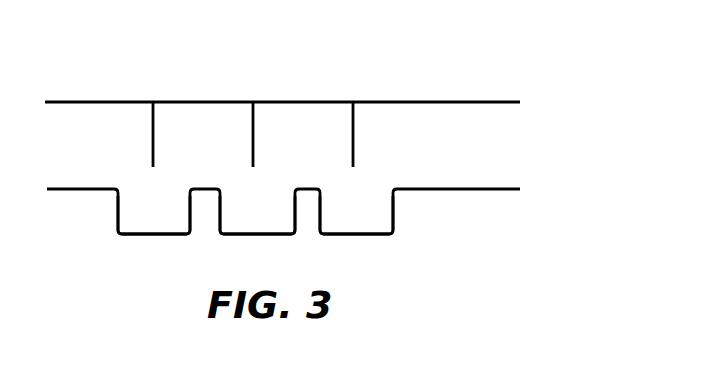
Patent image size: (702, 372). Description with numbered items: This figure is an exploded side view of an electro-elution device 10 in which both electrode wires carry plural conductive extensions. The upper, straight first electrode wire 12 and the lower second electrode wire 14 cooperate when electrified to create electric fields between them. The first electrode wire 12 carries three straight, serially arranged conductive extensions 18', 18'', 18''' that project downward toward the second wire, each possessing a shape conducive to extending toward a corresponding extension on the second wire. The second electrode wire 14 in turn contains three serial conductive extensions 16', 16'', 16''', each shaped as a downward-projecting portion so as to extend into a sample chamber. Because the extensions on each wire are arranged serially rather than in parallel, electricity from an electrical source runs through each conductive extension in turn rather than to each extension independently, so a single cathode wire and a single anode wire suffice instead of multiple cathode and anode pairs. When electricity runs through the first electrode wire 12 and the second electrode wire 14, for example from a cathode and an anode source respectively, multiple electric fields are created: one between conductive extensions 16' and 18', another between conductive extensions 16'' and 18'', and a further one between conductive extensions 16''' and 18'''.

The electro-elution device 10 is at (100, 78).
The first electrode wire 12 is at (480, 102).
The second electrode wire 14 is at (487, 188).
The conductive extension 16' is at (368, 236).
The conductive extension 16'' is at (264, 236).
The conductive extension 16''' is at (164, 236).
The conductive extension 18' is at (387, 134).
The conductive extension 18'' is at (289, 134).
The conductive extension 18''' is at (192, 134).